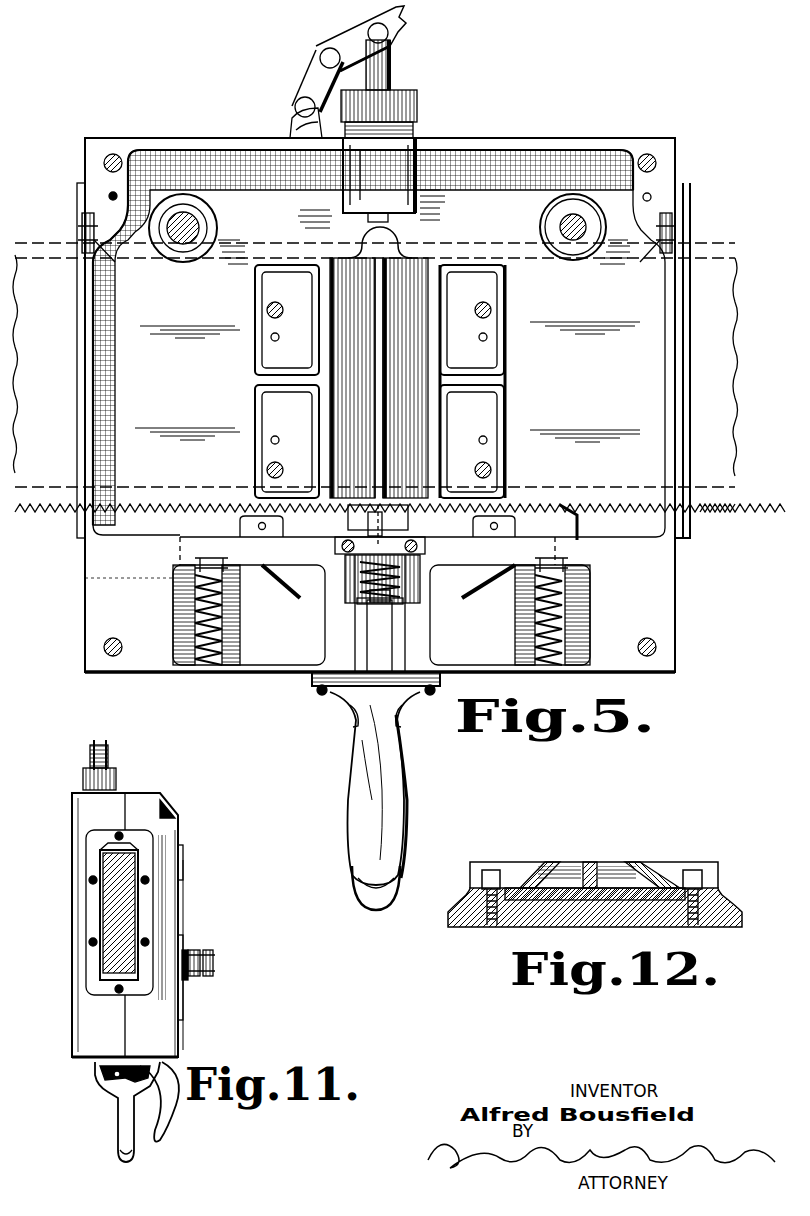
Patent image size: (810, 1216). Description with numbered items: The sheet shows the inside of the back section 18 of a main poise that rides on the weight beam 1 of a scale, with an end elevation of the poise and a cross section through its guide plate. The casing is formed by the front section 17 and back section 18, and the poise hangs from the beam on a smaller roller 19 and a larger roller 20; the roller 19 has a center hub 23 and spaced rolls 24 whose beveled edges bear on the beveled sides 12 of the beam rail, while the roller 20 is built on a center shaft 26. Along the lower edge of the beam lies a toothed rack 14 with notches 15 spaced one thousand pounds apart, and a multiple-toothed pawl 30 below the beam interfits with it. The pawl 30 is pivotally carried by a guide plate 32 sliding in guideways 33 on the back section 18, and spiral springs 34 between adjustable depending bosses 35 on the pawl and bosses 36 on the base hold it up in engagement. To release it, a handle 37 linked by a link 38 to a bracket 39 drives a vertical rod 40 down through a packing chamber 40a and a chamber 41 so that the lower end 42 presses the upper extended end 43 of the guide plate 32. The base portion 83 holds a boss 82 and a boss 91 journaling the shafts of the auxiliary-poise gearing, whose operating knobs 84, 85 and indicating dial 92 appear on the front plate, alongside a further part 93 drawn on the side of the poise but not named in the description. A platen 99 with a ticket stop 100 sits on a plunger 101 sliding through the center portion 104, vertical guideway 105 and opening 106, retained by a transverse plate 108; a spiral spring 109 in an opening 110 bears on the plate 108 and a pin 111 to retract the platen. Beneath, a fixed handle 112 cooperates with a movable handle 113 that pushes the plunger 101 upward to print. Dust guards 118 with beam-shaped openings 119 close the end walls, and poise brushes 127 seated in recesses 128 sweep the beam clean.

In FIG. 5, the weight beam 1 is at (713, 372).
In FIG. 11, the weight beam 1 is at (117, 905).
In FIG. 5, the beveled sides 12 is at (245, 326).
In FIG. 5, the toothed rack 14 is at (52, 512).
In FIG. 5, the notches 15 is at (704, 512).
In FIG. 11, the front section 17 is at (172, 892).
In FIG. 5, the back section 18 is at (498, 138).
In FIG. 11, the back section 18 is at (75, 890).
In FIG. 5, the smaller roller 19 is at (183, 214).
In FIG. 5, the larger roller 20 is at (563, 212).
In FIG. 5, the center hub 23 is at (178, 220).
In FIG. 5, the rolls 24 is at (190, 206).
In FIG. 5, the center shaft 26 is at (580, 218).
In FIG. 5, the multiple-toothed pawl 30 is at (562, 521).
In FIG. 5, the guide plate 32 is at (358, 336).
In FIG. 12, the guide plate 32 is at (577, 870).
In FIG. 5, the guideways 33 is at (487, 357).
In FIG. 12, the guideways 33 is at (490, 868).
In FIG. 5, the spiral springs 34 is at (196, 620).
In FIG. 5, the depending bosses 35 is at (200, 562).
In FIG. 5, the bosses 36 is at (209, 662).
In FIG. 5, the handle 37 is at (398, 18).
In FIG. 5, the link 38 is at (308, 74).
In FIG. 5, the bracket 39 is at (298, 118).
In FIG. 5, the vertical rod 40 is at (392, 70).
In FIG. 11, the vertical rod 40 is at (90, 760).
In FIG. 5, the packing chamber 40a is at (413, 130).
In FIG. 5, the chamber 41 is at (388, 170).
In FIG. 5, the lower end of rod 42 is at (367, 219).
In FIG. 5, the upper extended end of guide plate 43 is at (410, 236).
In FIG. 5, the boss 82 is at (503, 530).
In FIG. 5, the base portion 83 is at (85, 580).
In FIG. 11, the operating knob 84 is at (196, 980).
In FIG. 11, the operating knob 85 is at (214, 962).
In FIG. 5, the boss 91 is at (255, 528).
In FIG. 11, the indicating dial 92 is at (184, 1025).
In FIG. 11, the cover plate 93 is at (186, 1008).
In FIG. 5, the platen 99 is at (370, 516).
In FIG. 5, the ticket stop 100 is at (410, 517).
In FIG. 5, the plunger 101 is at (375, 641).
In FIG. 5, the center portion 104 is at (412, 598).
In FIG. 5, the vertical guideway 105 is at (360, 612).
In FIG. 5, the opening 106 is at (434, 680).
In FIG. 5, the transverse plate 108 is at (418, 549).
In FIG. 5, the spiral spring 109 is at (358, 588).
In FIG. 5, the opening 110 is at (412, 582).
In FIG. 5, the pin 111 is at (398, 607).
In FIG. 5, the fixed handle 112 is at (358, 795).
In FIG. 11, the fixed handle 112 is at (172, 1115).
In FIG. 5, the movable handle 113 is at (390, 906).
In FIG. 11, the movable handle 113 is at (120, 1132).
In FIG. 5, the dust guards 118 is at (80, 372).
In FIG. 11, the dust guards 118 is at (96, 843).
In FIG. 11, the opening 119 is at (140, 917).
In FIG. 5, the poise brushes 127 is at (88, 240).
In FIG. 5, the recesses 128 is at (104, 247).